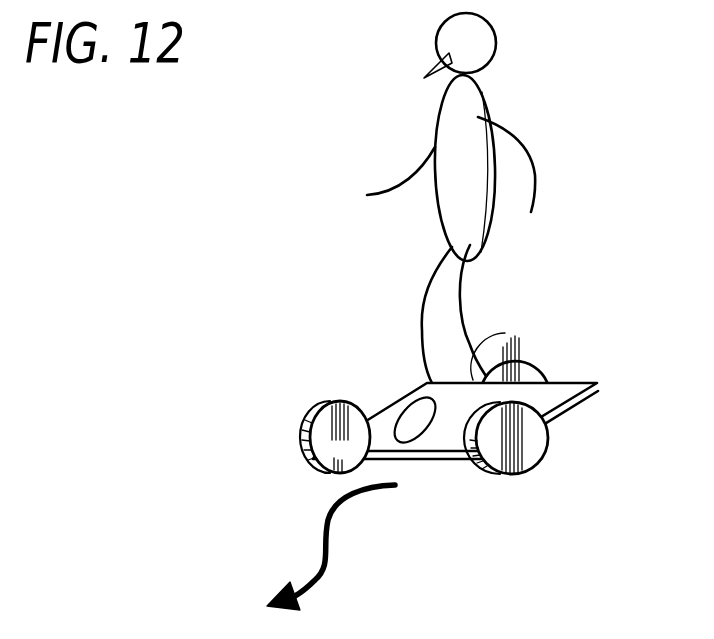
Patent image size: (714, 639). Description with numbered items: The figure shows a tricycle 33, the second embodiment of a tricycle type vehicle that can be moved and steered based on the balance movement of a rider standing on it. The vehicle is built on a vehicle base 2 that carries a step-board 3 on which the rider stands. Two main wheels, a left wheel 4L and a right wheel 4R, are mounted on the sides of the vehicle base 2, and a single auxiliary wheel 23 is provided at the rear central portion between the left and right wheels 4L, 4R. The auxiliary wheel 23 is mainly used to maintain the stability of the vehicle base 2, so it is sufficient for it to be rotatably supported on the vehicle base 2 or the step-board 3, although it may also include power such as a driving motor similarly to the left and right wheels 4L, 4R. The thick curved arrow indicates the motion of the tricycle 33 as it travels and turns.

The vehicle base 2 is at (455, 432).
The step-board 3 is at (562, 383).
The right wheel 4R is at (300, 432).
The left wheel 4L is at (527, 453).
The auxiliary wheel 23 is at (523, 343).
The tricycle 33 is at (304, 498).